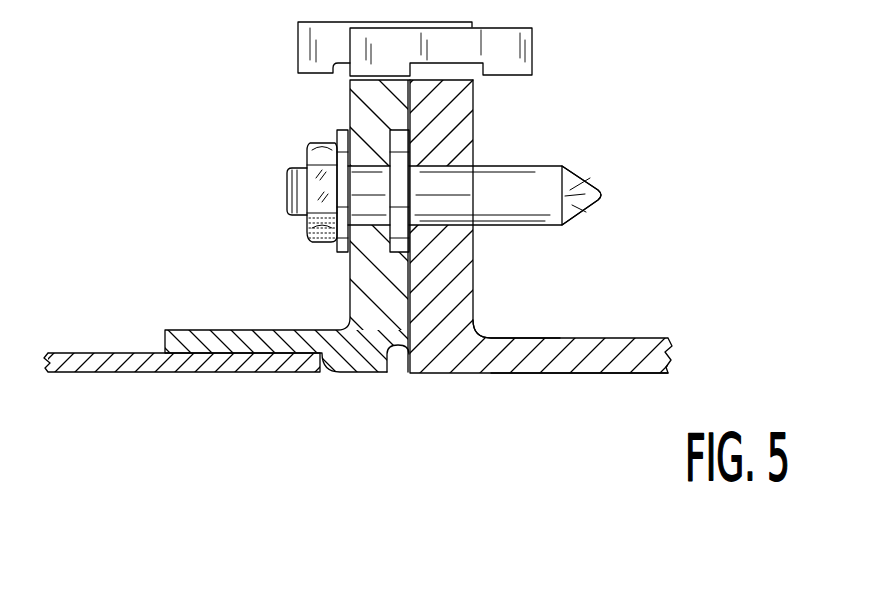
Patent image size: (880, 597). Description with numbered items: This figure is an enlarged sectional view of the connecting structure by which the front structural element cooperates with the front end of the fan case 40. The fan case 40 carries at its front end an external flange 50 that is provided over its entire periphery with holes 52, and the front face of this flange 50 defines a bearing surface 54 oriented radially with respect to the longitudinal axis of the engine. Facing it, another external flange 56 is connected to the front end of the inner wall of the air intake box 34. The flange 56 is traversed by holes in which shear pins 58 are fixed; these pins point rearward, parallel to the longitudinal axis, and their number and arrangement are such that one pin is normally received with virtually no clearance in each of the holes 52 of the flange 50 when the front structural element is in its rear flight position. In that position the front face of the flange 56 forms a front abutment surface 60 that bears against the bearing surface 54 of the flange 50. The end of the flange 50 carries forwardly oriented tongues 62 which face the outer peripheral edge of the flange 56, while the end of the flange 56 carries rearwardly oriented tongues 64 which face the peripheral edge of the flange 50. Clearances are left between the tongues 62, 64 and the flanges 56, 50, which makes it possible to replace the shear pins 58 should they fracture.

The air intake box 34 is at (75, 373).
The fan case 40 is at (608, 373).
The external flange 50 is at (447, 262).
The holes 52 is at (442, 167).
The bearing surface 54 is at (386, 373).
The external flange 56 is at (372, 286).
The shear pins 58 is at (598, 190).
The front abutment surface 60 is at (443, 289).
The tongues 62 is at (323, 34).
The tongues 64 is at (510, 48).